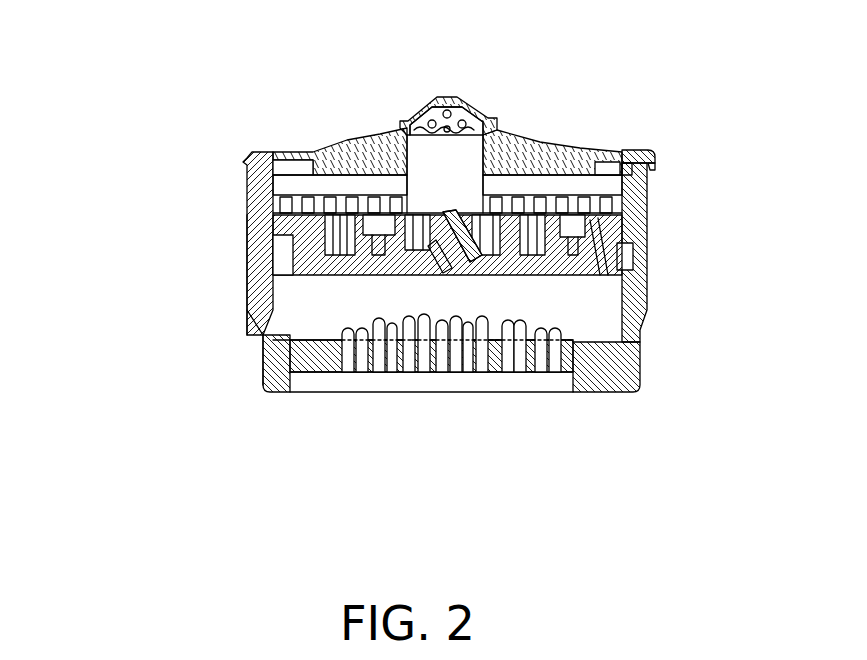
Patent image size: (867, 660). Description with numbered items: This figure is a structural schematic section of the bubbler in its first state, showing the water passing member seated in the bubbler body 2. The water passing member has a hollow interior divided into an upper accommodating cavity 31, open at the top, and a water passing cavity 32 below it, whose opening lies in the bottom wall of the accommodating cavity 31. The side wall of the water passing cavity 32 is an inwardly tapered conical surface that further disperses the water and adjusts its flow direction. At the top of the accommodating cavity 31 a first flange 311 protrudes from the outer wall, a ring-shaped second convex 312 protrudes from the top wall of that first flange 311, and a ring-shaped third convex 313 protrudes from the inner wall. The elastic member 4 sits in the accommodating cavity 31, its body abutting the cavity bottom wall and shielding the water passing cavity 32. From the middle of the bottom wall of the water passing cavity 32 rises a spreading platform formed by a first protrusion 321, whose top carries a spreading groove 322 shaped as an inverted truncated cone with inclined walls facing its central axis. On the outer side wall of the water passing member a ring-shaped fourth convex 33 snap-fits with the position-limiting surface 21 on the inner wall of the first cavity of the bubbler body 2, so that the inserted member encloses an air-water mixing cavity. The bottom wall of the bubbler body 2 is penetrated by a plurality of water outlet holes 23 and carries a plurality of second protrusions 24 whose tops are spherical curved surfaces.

The bubbler body 2 is at (265, 363).
The position-limiting surface 21 is at (262, 232).
The water outlet holes 23 is at (333, 357).
The second protrusions 24 is at (458, 340).
The accommodating cavity 31 is at (278, 190).
The first flange 311 is at (653, 158).
The second convex 312 is at (633, 153).
The third convex 313 is at (627, 163).
The water passing cavity 32 is at (340, 240).
The first protrusion 321 is at (435, 242).
The spreading groove 322 is at (440, 217).
The fourth convex 33 is at (645, 248).
The elastic member 4 is at (462, 108).